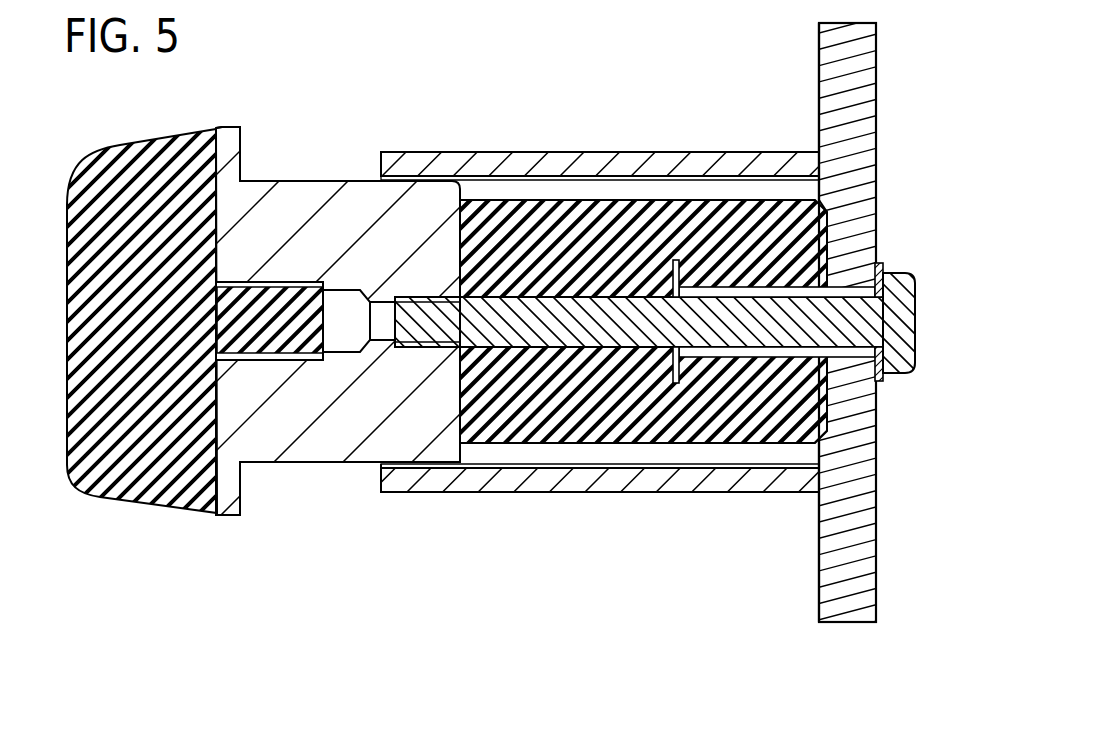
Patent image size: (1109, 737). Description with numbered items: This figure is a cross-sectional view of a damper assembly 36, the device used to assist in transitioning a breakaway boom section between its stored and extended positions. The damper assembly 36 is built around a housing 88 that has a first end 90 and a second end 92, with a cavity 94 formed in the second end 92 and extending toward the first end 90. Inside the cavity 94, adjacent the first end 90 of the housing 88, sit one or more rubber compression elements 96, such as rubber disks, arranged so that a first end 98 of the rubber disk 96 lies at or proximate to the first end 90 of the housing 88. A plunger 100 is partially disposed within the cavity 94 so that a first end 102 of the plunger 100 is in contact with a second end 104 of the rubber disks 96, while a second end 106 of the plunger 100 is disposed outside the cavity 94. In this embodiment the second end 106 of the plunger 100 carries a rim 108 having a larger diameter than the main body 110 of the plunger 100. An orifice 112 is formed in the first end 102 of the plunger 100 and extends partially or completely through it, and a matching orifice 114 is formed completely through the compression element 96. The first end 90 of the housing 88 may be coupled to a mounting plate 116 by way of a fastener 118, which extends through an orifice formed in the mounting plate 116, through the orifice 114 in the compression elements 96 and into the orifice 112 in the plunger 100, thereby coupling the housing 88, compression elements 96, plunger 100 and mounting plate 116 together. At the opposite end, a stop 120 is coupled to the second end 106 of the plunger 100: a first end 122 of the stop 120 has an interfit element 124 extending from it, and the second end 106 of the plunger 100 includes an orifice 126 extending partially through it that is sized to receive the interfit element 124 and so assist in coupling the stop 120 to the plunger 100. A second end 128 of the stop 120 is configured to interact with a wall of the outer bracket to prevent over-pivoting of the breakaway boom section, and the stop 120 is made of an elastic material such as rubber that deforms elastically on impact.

The damper assembly 36 is at (514, 103).
The housing 88 is at (680, 483).
The first end of the housing 90 is at (712, 0).
The second end of the housing 92 is at (380, 482).
The cavity 94 is at (648, 187).
The rubber compression element 96 is at (812, 237).
The first end of the rubber disk 98 is at (828, 210).
The plunger 100 is at (298, 455).
The first end of the plunger 102 is at (458, 213).
The second end of the rubber disks 104 is at (460, 247).
The second end of the plunger 106 is at (240, 167).
The rim 108 is at (233, 127).
The main body of the plunger 110 is at (323, 453).
The orifice in the plunger 112 is at (430, 342).
The orifice in the compression element 114 is at (778, 345).
The mounting plate 116 is at (858, 78).
The fastener 118 is at (847, 340).
The stop 120 is at (850, 293).
The first end of the stop 122 is at (213, 440).
The interfit element 124 is at (268, 302).
The orifice in the second end of the plunger 126 is at (257, 358).
The second end of the stop 128 is at (63, 313).